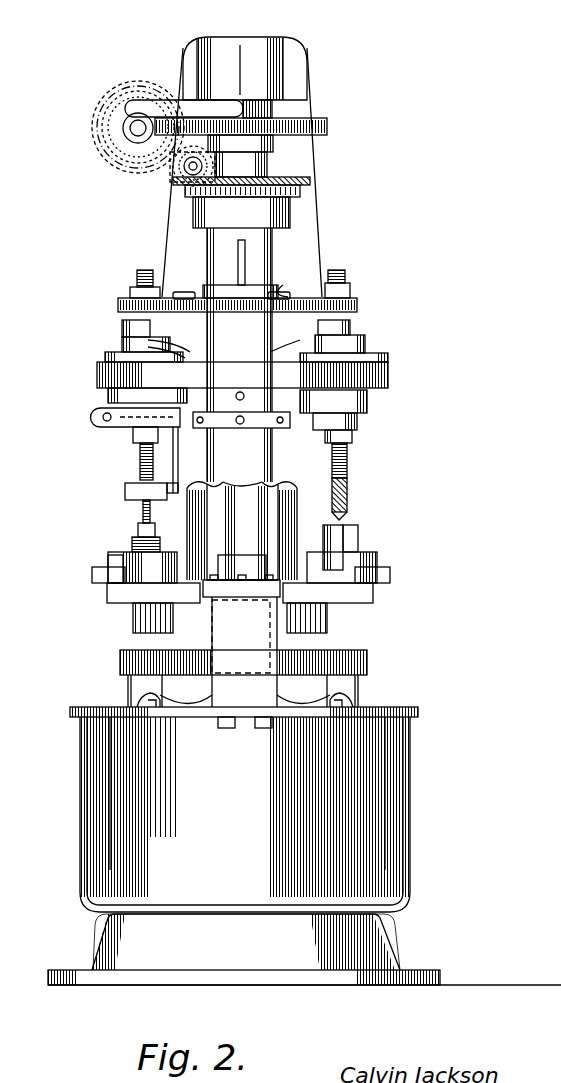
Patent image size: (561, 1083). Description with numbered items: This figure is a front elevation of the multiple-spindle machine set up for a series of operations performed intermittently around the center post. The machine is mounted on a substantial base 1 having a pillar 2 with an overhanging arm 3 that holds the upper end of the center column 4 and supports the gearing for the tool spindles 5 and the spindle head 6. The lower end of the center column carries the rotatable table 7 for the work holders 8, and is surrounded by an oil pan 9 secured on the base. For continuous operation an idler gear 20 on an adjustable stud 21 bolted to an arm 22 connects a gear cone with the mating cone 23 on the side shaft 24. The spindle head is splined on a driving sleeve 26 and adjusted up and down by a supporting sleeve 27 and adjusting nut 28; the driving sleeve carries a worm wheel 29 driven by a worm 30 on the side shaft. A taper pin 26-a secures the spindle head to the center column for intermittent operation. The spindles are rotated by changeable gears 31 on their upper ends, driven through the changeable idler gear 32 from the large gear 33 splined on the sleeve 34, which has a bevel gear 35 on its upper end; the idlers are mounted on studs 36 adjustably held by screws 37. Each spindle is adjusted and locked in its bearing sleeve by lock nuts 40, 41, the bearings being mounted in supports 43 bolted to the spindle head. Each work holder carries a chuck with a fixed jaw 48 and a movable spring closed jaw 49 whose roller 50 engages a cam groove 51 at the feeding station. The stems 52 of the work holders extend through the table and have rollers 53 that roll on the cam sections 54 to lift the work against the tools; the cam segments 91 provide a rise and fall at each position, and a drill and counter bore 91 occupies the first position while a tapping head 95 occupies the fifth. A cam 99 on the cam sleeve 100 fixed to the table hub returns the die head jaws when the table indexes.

The base 1 is at (370, 948).
The pillar 2 is at (300, 222).
The overhanging arm 3 is at (250, 53).
The center column 4 is at (272, 102).
The tool spindles 5 is at (139, 458).
The spindle head 6 is at (96, 375).
The rotatable table 7 is at (368, 664).
The work holders 8 is at (112, 598).
The oil pan 9 is at (385, 803).
The idler gear 20 is at (176, 176).
The adjustable stud 21 is at (186, 184).
The arm 22 is at (222, 207).
The mating cone 23 is at (110, 96).
The side shaft 24 is at (136, 128).
The driving sleeve 26 is at (268, 163).
The taper pin 26-a is at (240, 392).
The supporting sleeve 27 is at (215, 482).
The adjusting nut 28 is at (290, 428).
The worm wheel 29 is at (300, 123).
The worm 30 is at (132, 158).
The changeable gears 31 is at (117, 304).
The idler gear 32 is at (180, 292).
The large gear 33 is at (260, 285).
The sleeve 34 is at (222, 268).
The bevel gear 35 is at (308, 188).
The studs 36 is at (305, 290).
The screws 37 is at (195, 352).
The lock nut 40 is at (132, 437).
The lock nut 41 is at (136, 283).
The supports 43 is at (124, 357).
The fixed jaw 48 is at (136, 545).
The movable spring closed jaw 49 is at (110, 563).
The roller 50 is at (98, 580).
The cam groove 51 is at (205, 590).
The stems 52 is at (152, 678).
The rollers 53 is at (160, 707).
The cam sections 54 is at (137, 700).
The drill and counter bore 91 is at (350, 500).
The tapping head 95 is at (124, 491).
The cam 99 is at (242, 533).
The cam sleeve 100 is at (242, 547).